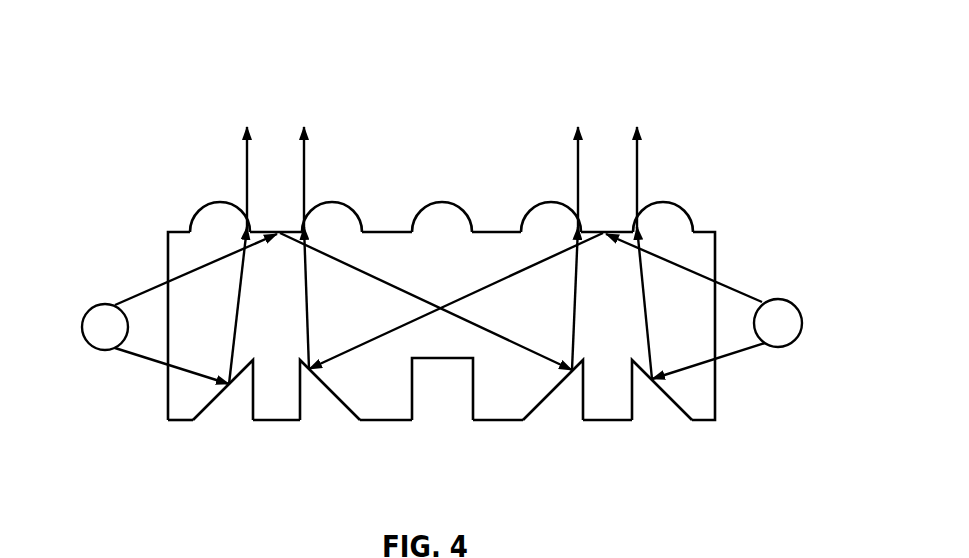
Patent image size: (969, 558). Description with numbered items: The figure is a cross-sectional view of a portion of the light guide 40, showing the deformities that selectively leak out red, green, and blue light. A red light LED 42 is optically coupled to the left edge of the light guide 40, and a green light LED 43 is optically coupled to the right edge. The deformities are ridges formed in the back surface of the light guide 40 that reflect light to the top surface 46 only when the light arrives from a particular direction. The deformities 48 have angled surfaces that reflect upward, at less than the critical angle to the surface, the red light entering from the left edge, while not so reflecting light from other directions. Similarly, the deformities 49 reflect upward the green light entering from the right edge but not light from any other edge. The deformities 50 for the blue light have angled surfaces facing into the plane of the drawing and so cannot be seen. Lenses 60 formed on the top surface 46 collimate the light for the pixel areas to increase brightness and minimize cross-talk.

The light guide 40 is at (726, 80).
The red light LED 42 is at (97, 350).
The green light LED 43 is at (778, 300).
The top surface 46 is at (708, 227).
The deformities for red light 48 is at (232, 420).
The deformities for green light 49 is at (318, 420).
The deformities for blue light 50 is at (442, 420).
The lenses 60 is at (200, 215).